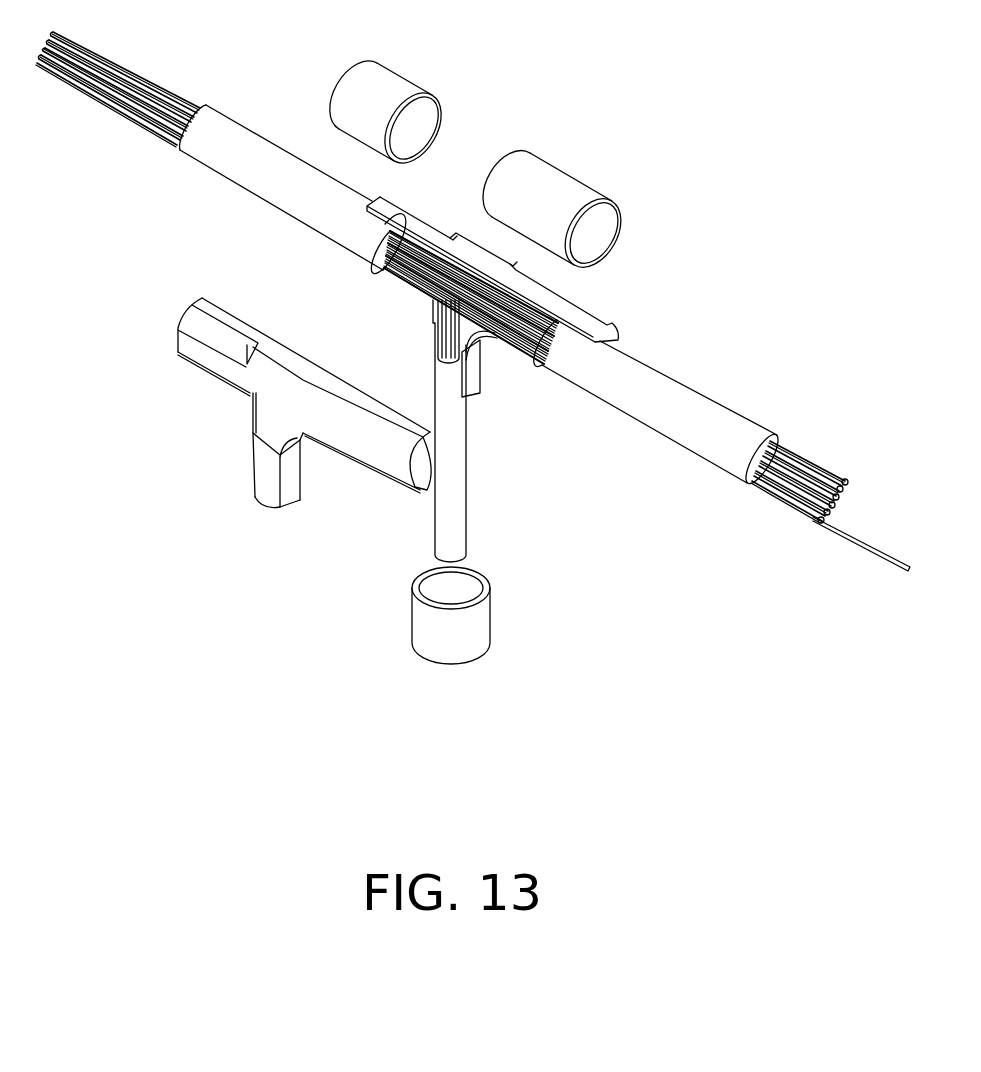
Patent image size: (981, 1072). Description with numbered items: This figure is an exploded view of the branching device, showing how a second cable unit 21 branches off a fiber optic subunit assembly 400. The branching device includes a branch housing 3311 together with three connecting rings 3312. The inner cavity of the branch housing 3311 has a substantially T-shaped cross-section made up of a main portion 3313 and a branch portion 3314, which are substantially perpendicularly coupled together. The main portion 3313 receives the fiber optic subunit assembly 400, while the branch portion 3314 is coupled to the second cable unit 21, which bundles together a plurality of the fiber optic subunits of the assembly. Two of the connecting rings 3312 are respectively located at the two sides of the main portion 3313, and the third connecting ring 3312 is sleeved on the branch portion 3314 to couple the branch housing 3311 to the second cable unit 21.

The fiber optic subunit assembly 400 is at (120, 70).
The connecting ring 3312 is at (390, 80).
The second cable unit 21 is at (460, 460).
The branch housing 3311 is at (251, 403).
The main portion 3313 is at (275, 379).
The branch portion 3314 is at (267, 470).